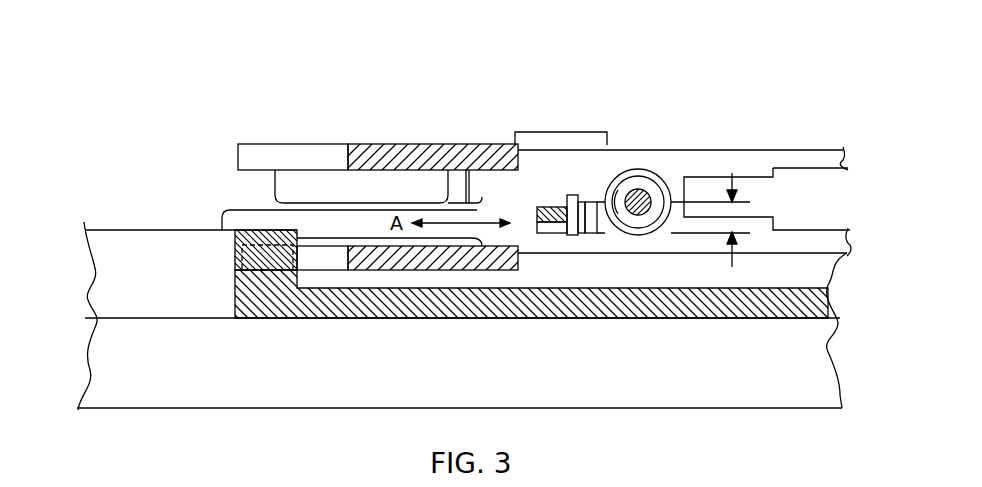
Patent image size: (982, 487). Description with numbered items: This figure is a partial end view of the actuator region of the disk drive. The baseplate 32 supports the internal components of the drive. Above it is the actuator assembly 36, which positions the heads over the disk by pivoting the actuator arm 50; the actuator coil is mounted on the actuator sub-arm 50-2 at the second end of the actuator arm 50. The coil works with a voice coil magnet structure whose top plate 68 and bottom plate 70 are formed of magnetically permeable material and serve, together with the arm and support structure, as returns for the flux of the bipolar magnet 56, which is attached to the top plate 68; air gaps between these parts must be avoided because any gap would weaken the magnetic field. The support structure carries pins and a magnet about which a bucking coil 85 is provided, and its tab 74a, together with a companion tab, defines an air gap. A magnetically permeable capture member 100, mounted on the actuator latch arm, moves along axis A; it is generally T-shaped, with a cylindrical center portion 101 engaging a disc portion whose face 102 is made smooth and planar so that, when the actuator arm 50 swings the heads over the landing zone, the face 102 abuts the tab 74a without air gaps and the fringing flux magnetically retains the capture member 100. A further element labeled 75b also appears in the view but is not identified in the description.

The baseplate 32 is at (606, 375).
The actuator assembly 36 is at (563, 98).
The actuator arm 50 is at (652, 163).
The actuator sub-arm 50-2 is at (242, 220).
The bipolar magnet 56 is at (257, 180).
The top plate 68 is at (292, 150).
The bottom plate 70 is at (320, 253).
The tab 74a is at (593, 218).
The roller shaft 75b is at (653, 197).
The bucking coil 85 is at (637, 170).
The capture member 100 is at (552, 238).
The cylindrical center portion 101 is at (560, 206).
The face 102 is at (577, 196).